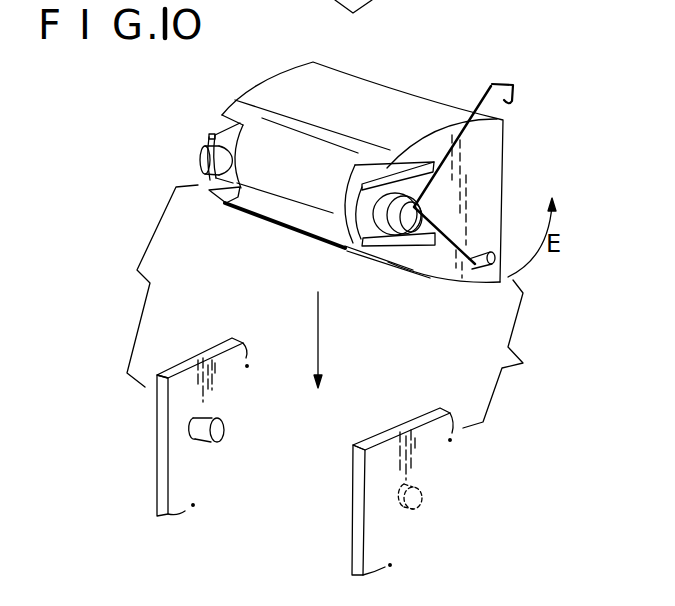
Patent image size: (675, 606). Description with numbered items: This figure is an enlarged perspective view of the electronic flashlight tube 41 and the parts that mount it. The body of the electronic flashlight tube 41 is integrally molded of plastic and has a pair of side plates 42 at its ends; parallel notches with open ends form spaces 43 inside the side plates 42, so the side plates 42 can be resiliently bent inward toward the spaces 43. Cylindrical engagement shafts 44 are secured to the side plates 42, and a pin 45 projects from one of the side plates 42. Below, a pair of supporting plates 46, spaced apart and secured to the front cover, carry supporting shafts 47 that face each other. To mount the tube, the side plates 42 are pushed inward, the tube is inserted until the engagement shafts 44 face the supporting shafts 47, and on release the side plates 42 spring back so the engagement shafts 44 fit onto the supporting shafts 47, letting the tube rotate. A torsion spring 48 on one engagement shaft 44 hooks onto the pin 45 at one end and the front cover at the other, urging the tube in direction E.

The electronic flashlight tube 41 is at (392, 80).
The side plates 42 is at (213, 136).
The spaces 43 is at (225, 206).
The engagement shafts 44 is at (203, 153).
The pin 45 is at (474, 265).
The supporting plates 46 is at (157, 446).
The supporting shafts 47 is at (204, 443).
The torsion spring 48 is at (490, 91).